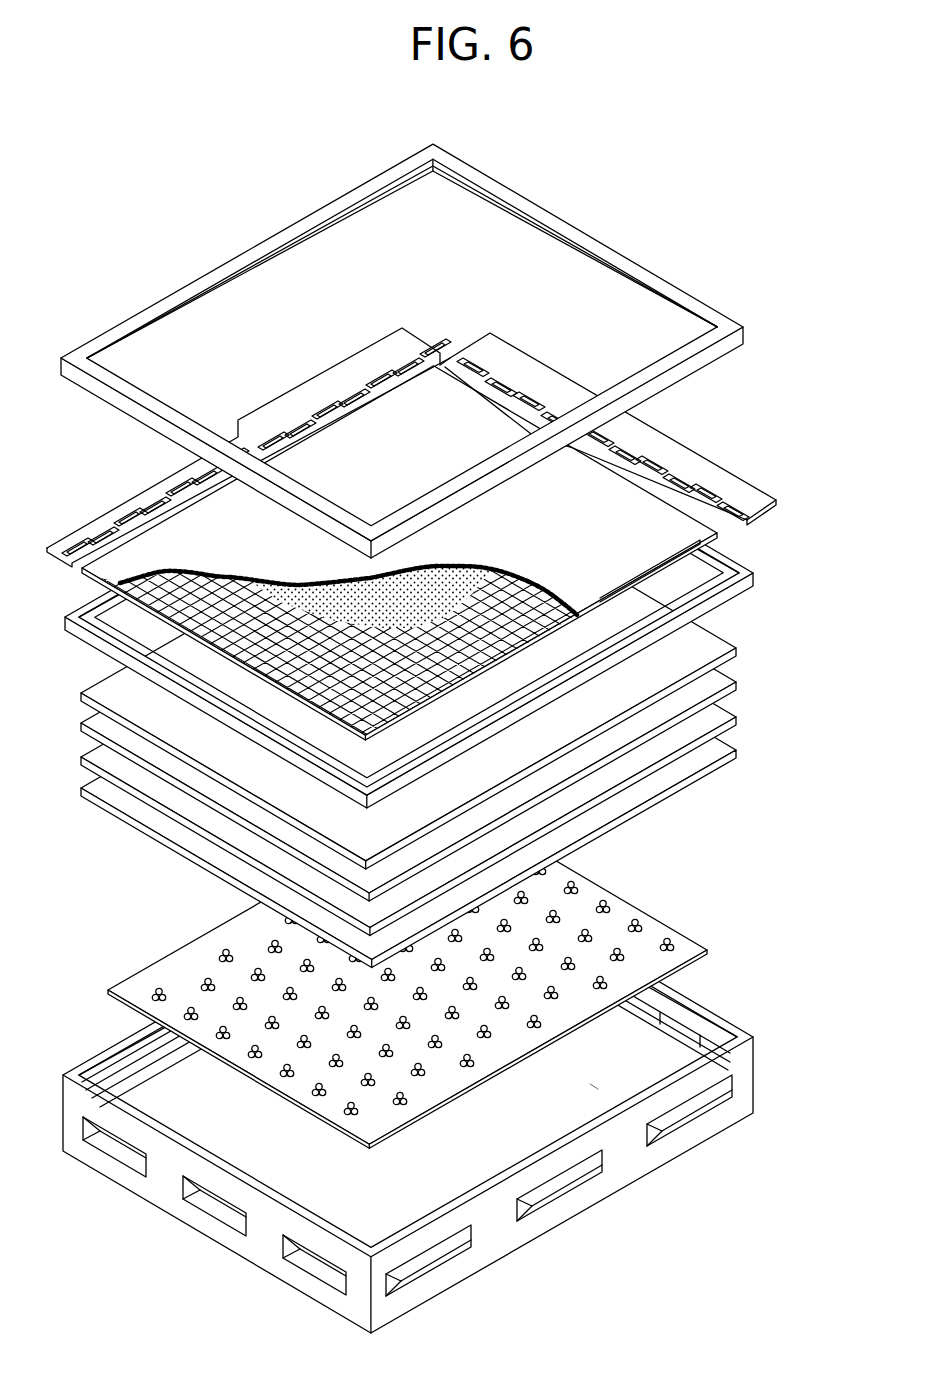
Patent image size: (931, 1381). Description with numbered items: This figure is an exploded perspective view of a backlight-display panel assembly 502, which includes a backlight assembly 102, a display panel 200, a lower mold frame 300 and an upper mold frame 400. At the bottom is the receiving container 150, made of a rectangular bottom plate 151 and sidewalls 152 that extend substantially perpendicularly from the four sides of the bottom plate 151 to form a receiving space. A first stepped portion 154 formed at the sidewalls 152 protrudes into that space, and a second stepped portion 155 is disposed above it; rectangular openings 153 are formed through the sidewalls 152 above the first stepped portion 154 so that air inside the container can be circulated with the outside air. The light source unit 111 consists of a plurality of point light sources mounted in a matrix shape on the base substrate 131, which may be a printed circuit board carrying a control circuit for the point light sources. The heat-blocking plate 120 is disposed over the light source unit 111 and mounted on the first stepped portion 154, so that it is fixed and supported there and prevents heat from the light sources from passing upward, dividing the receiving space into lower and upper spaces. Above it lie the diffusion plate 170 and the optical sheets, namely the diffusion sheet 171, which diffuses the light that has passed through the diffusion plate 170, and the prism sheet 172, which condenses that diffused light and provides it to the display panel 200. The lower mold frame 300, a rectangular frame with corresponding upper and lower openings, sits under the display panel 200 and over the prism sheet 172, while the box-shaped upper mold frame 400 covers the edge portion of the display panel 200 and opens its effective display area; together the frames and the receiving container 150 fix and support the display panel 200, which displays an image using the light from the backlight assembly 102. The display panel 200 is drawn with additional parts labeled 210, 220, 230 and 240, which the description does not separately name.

The backlight-display panel assembly 502 is at (415, 117).
The upper mold frame 400 is at (189, 266).
The display panel 200 is at (112, 490).
The flexible printed circuit 240 is at (414, 325).
The display panel 210 is at (295, 690).
The upper substrate 220 is at (683, 533).
The polarizer 230 is at (462, 572).
The lower mold frame 300 is at (754, 580).
The backlight assembly 102 is at (808, 1240).
The prism sheet 172 is at (740, 650).
The diffusion sheet 171 is at (740, 684).
The diffusion plate 170 is at (740, 718).
The heat-blocking plate 120 is at (740, 750).
The base substrate 131 is at (712, 949).
The light source unit 111 is at (643, 924).
The receiving container 150 is at (760, 1160).
The bottom plate 151 is at (585, 1085).
The sidewalls 152 is at (630, 1176).
The openings 153 is at (688, 1119).
The first stepped portion 154 is at (185, 1060).
The second stepped portion 155 is at (137, 1050).